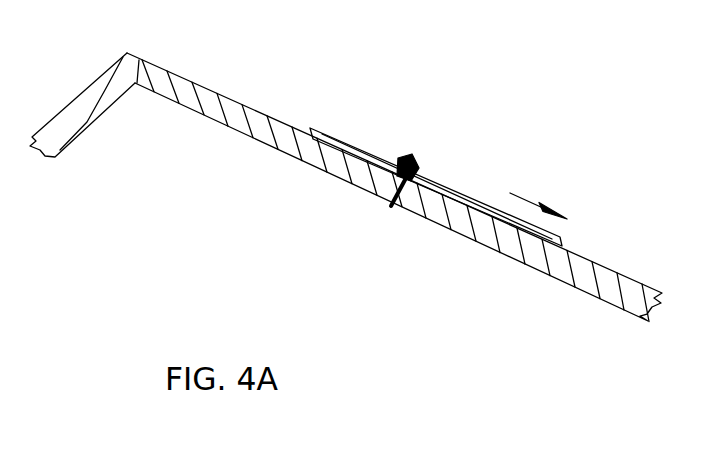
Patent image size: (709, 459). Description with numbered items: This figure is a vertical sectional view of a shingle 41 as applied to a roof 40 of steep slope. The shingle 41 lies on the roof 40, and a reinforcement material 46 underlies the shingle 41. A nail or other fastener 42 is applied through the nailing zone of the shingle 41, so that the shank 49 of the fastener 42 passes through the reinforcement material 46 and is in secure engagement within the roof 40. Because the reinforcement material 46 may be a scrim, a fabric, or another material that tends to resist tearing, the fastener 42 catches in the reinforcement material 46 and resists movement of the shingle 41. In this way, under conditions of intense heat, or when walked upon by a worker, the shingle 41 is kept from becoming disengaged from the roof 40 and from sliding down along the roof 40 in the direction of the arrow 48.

The roof 40 is at (172, 88).
The shingle 41 is at (332, 118).
The fastener 42 is at (413, 159).
The reinforcement material 46 is at (448, 227).
The arrow 48 is at (530, 202).
The shank 49 is at (382, 199).